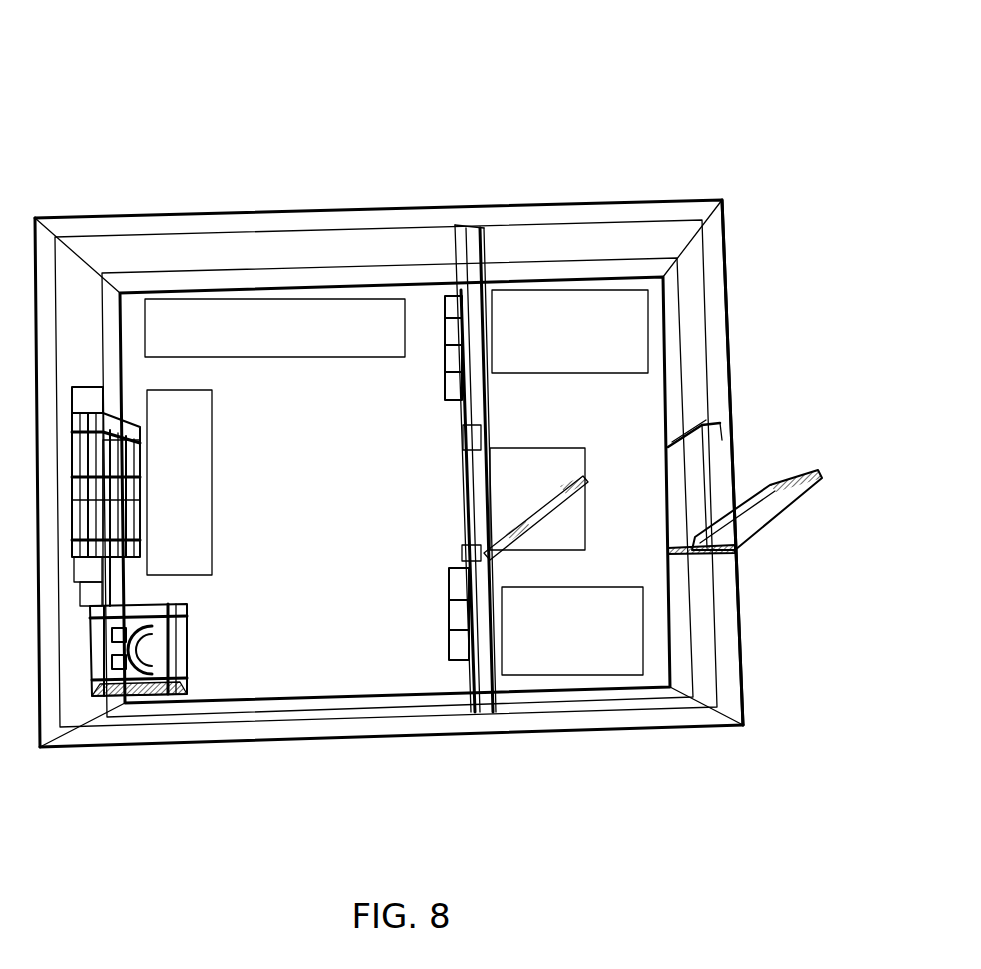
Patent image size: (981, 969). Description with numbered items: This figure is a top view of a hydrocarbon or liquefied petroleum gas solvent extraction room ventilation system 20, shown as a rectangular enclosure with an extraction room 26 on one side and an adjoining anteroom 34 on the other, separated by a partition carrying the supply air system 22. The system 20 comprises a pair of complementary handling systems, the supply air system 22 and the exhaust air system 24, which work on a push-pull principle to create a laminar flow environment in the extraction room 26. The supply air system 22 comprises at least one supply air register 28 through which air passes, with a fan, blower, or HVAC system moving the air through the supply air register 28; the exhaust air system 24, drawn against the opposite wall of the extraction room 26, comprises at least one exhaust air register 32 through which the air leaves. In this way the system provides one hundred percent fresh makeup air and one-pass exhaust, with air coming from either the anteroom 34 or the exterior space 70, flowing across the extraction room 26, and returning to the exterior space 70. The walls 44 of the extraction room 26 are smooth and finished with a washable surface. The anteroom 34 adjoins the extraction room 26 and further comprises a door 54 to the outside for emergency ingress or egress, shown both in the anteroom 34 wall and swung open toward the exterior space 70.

The extraction room ventilation system 20 is at (157, 55).
The supply air system 22 is at (452, 557).
The exhaust air system 24 is at (90, 380).
The extraction room 26 is at (318, 516).
The supply air register 28 is at (455, 590).
The exhaust air register 32 is at (140, 480).
The anteroom 34 is at (580, 435).
The walls 44 is at (251, 752).
The door 54 is at (540, 510).
The exterior space 70 is at (703, 802).